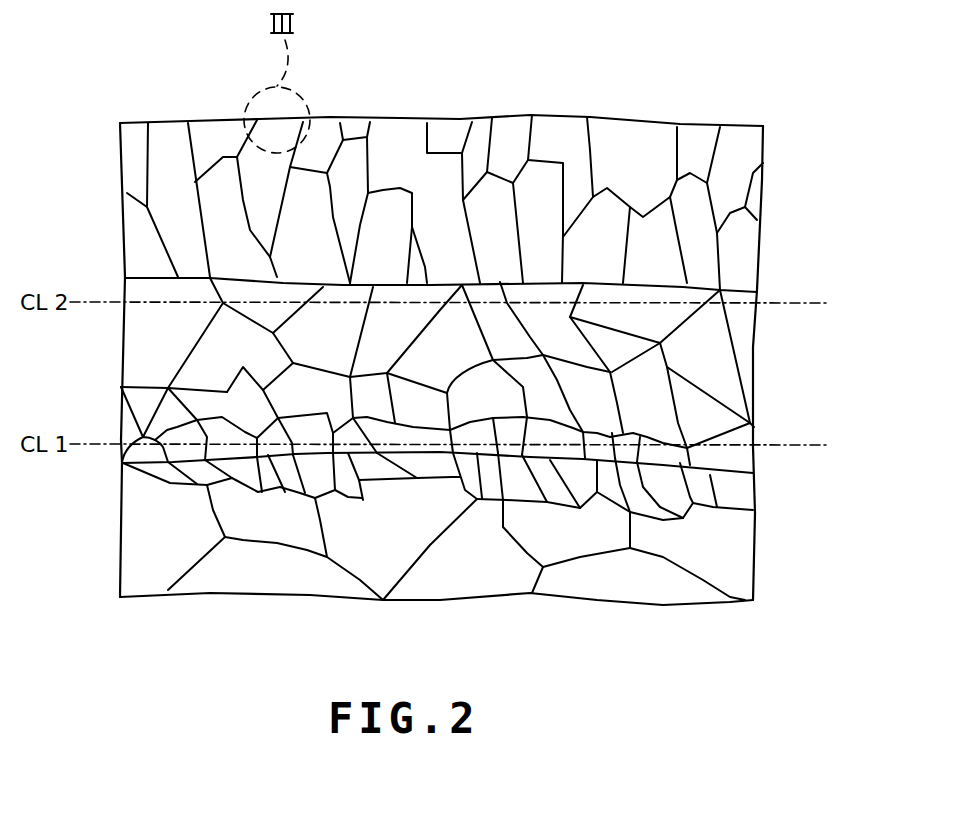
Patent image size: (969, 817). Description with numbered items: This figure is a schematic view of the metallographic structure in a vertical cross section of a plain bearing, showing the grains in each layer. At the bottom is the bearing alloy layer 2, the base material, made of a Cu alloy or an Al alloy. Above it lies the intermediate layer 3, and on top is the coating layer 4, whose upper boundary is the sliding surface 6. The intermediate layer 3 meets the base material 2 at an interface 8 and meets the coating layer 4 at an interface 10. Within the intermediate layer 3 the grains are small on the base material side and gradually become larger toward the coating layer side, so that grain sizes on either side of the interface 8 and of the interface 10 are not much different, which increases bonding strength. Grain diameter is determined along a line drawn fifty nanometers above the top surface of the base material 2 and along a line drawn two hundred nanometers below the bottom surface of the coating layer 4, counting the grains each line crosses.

The bearing alloy layer 2 is at (765, 555).
The intermediate layer 3 is at (760, 343).
The coating layer 4 is at (763, 218).
The sliding surface 6 is at (687, 125).
The interface 8 is at (759, 477).
The interface 10 is at (759, 290).